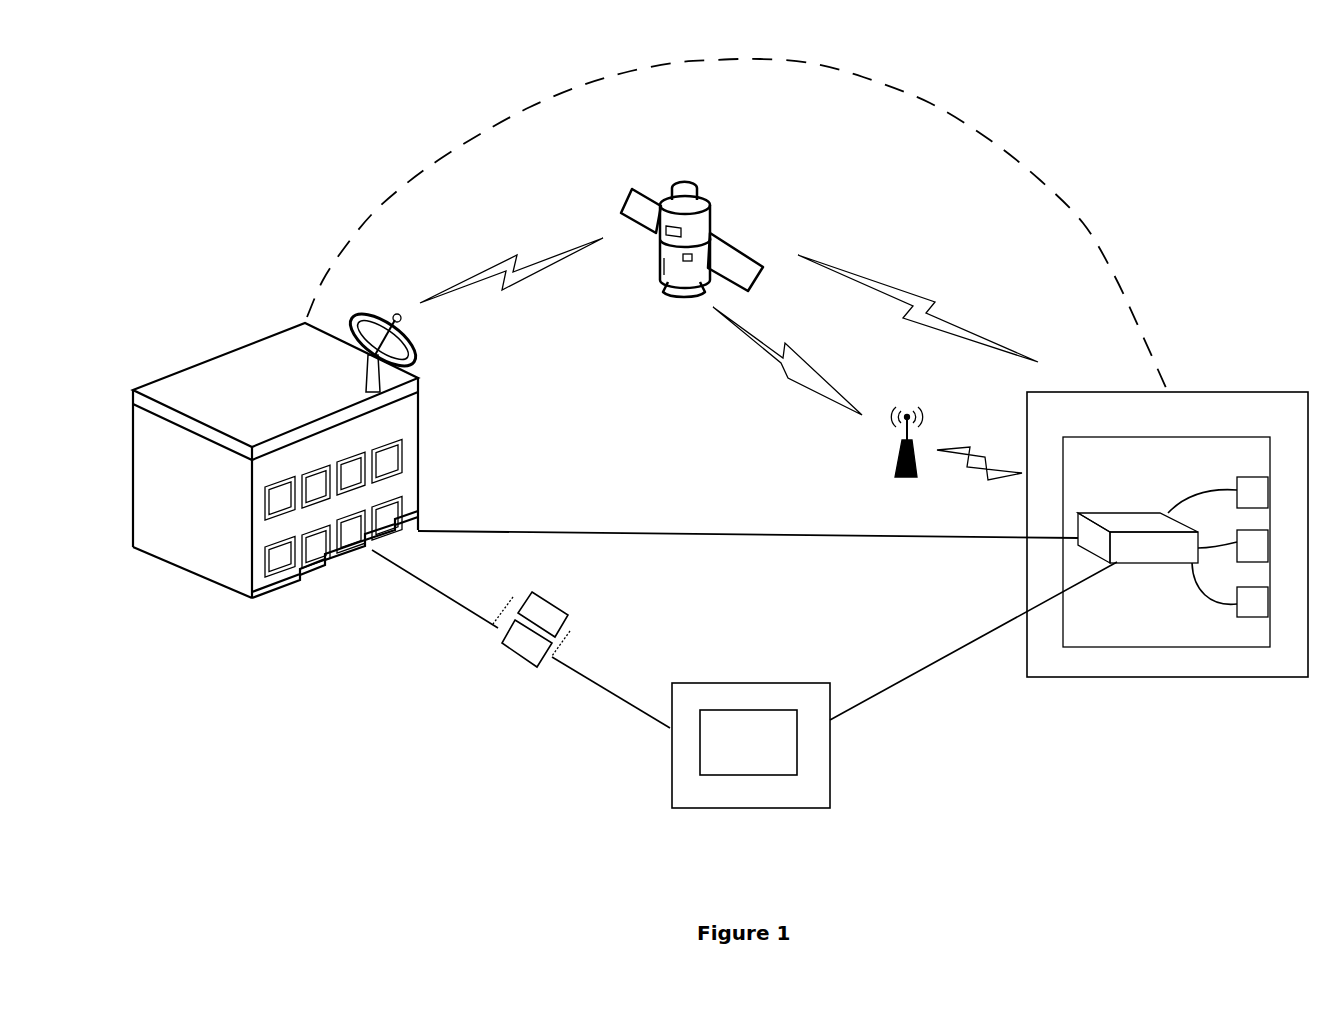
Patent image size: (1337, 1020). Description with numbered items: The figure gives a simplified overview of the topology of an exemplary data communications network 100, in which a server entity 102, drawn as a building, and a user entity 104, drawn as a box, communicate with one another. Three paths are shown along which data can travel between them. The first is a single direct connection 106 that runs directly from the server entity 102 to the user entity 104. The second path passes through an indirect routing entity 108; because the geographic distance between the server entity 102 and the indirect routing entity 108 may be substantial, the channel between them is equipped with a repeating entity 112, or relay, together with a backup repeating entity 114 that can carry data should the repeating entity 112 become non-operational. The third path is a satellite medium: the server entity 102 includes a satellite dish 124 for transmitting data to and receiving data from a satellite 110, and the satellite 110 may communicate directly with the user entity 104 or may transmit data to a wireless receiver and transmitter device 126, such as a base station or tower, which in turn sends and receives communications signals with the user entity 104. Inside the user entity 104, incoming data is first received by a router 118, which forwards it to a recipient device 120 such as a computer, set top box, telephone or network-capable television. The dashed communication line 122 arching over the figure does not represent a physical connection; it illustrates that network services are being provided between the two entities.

The network 100 is at (1270, 244).
The server entity 102 is at (275, 460).
The user entity 104 is at (1167, 512).
The direct connection 106 is at (748, 524).
The indirect routing entity 108 is at (751, 745).
The satellite 110 is at (692, 236).
The repeating entity 112 is at (523, 646).
The backup repeating entity 114 is at (531, 617).
The router 118 is at (1138, 521).
The recipient device 120 is at (1218, 533).
The communication line 122 is at (737, 224).
The satellite dish 124 is at (383, 344).
The wireless receiver and transmitter device 126 is at (911, 424).